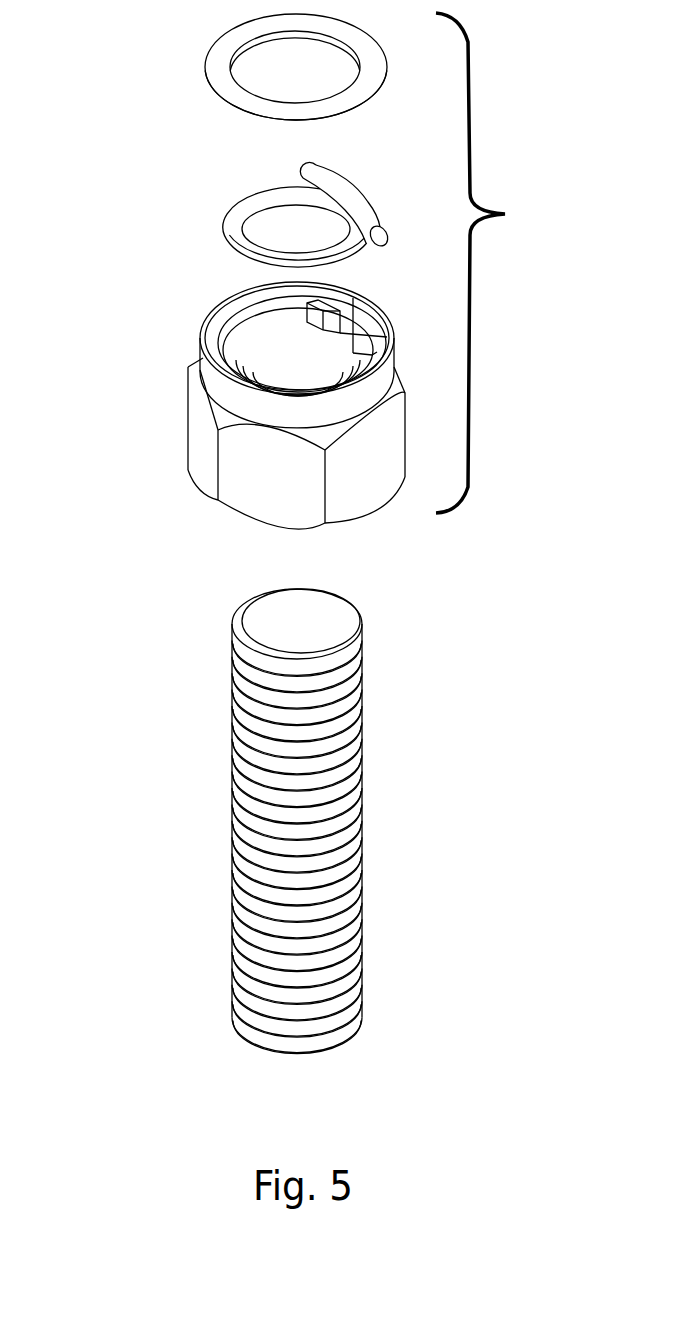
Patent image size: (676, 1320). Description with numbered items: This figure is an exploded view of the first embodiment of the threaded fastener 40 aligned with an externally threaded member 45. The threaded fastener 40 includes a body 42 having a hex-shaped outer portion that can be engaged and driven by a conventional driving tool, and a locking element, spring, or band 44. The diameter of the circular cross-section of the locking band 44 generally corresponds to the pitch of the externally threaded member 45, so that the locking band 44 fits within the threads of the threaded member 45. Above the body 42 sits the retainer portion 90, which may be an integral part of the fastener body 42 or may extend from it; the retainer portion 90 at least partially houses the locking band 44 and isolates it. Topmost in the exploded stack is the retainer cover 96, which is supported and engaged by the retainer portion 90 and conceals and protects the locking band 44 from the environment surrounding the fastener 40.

The threaded fastener 40 is at (488, 263).
The body 42 is at (175, 423).
The locking band 44 is at (198, 217).
The externally threaded member 45 is at (343, 830).
The retainer portion 90 is at (175, 342).
The retainer cover 96 is at (218, 72).